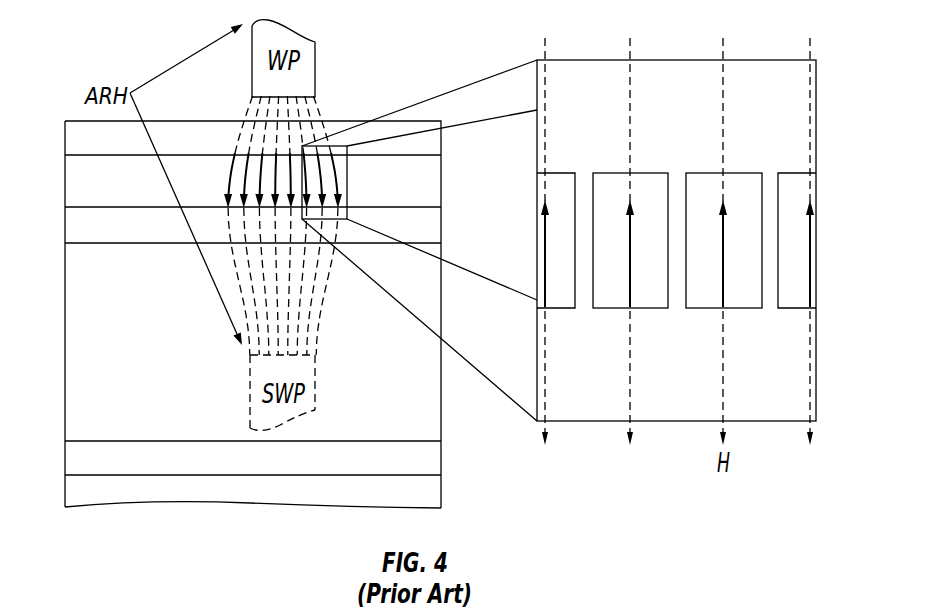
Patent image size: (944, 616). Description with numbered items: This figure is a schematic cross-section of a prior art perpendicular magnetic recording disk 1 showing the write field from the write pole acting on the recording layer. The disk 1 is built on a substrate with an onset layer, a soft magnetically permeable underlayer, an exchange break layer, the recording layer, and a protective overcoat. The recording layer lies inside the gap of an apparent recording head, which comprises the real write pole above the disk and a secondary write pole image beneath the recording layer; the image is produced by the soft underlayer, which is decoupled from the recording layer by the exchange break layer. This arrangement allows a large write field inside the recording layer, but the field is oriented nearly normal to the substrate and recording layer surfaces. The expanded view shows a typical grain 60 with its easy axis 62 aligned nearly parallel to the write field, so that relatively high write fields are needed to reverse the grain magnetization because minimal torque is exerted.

The recording disk 1 is at (50, 120).
The grain 60 is at (710, 178).
The easy axis 62 is at (723, 278).